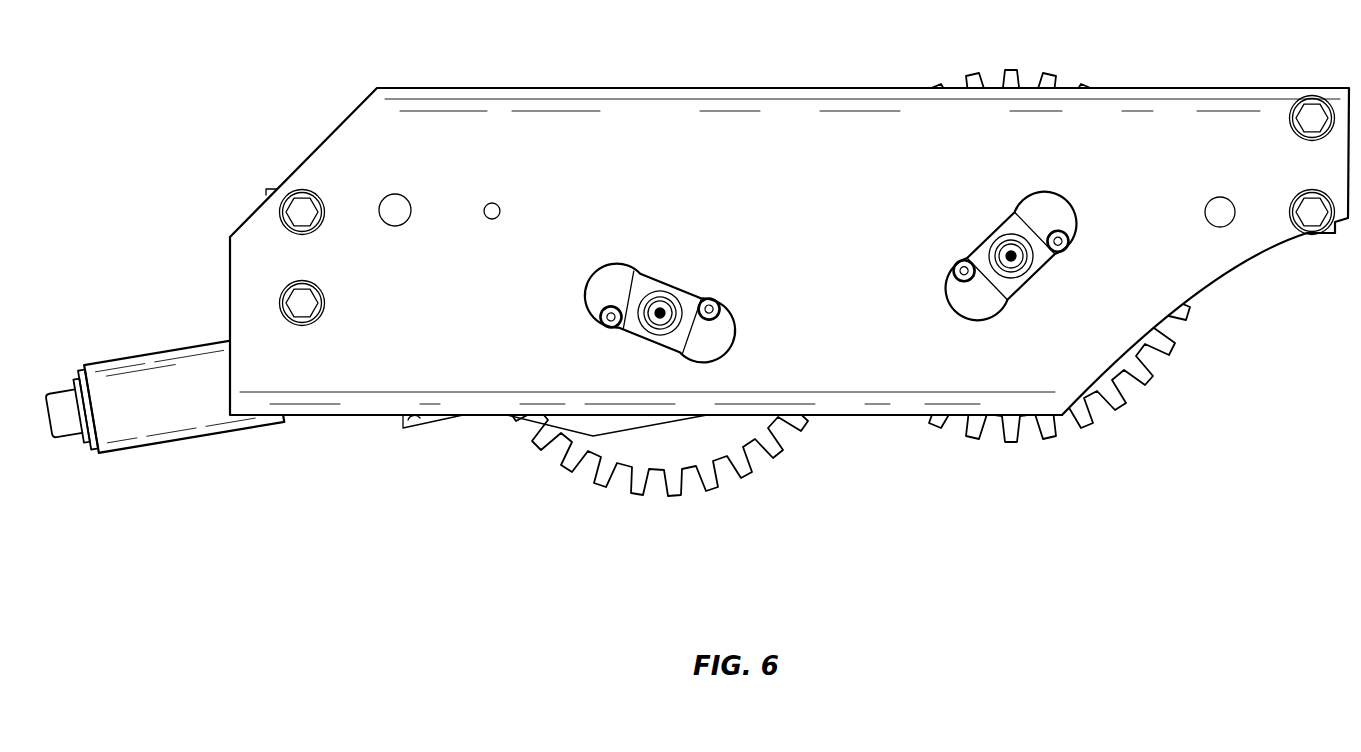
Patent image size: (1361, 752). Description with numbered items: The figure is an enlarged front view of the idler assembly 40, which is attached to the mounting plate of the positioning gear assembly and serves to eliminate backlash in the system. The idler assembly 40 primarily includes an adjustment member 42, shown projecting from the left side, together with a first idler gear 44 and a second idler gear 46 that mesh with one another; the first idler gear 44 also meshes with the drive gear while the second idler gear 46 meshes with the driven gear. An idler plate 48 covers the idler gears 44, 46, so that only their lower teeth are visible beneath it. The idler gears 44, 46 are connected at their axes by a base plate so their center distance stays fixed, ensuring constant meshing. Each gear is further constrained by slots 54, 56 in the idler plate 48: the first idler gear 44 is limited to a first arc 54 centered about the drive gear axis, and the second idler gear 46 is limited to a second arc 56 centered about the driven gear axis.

The idler assembly 40 is at (280, 116).
The adjustment member 42 is at (122, 357).
The first idler gear 44 is at (637, 496).
The second idler gear 46 is at (1009, 444).
The idler plate 48 is at (900, 412).
The first arc slot 54 is at (610, 270).
The second arc slot 56 is at (957, 318).